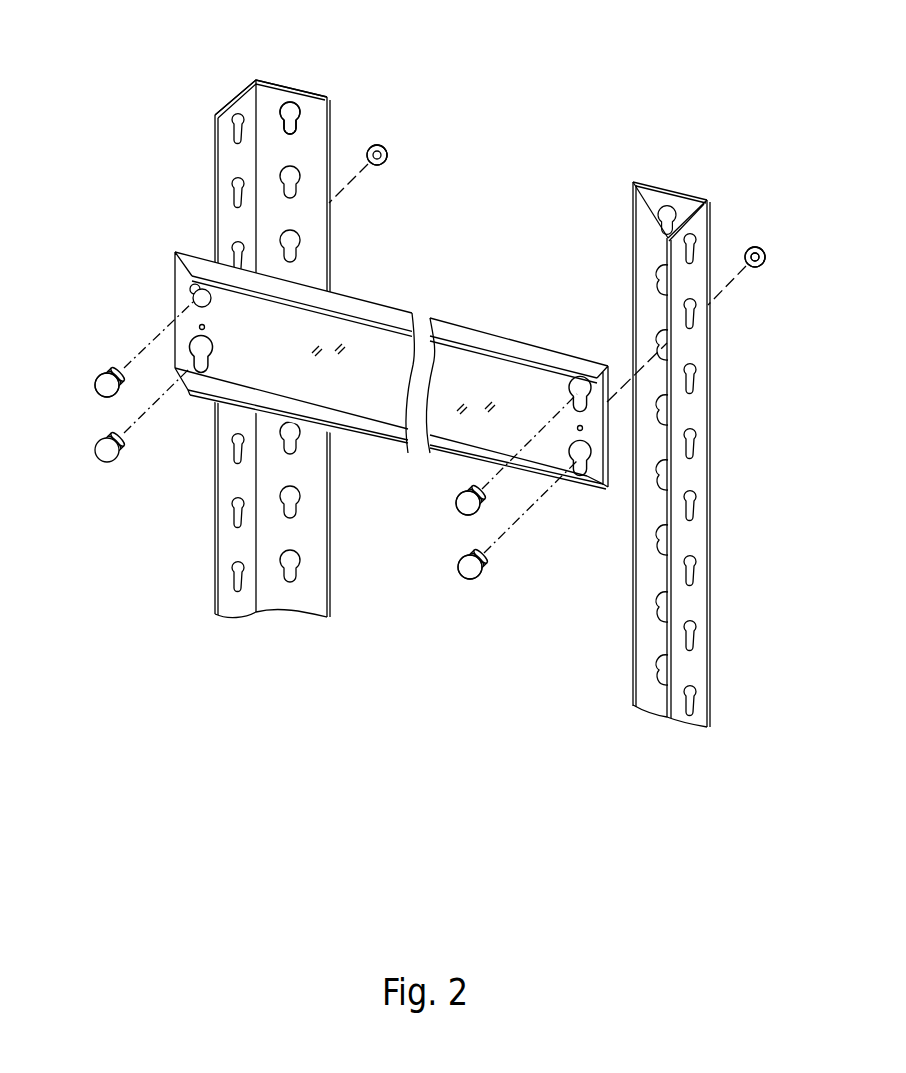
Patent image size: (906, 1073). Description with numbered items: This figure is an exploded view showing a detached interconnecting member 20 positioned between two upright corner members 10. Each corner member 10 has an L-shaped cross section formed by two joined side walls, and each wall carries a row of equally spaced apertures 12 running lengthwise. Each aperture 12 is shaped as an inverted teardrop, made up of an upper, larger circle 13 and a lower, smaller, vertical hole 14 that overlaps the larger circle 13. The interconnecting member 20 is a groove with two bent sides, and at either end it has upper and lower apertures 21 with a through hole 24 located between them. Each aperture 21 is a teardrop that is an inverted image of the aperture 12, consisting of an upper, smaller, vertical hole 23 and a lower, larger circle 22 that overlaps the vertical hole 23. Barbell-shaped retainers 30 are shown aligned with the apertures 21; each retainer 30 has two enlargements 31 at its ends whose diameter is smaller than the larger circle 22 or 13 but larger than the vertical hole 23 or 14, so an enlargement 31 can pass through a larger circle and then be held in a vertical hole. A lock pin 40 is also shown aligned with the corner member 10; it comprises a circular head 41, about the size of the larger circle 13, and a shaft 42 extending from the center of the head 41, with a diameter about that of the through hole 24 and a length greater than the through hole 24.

The corner member 10 is at (231, 91).
The aperture 12 is at (284, 92).
The larger circle 13 is at (294, 109).
The vertical hole 14 is at (298, 131).
The interconnecting member 20 is at (363, 291).
The aperture 21 is at (190, 345).
The larger circle 22 is at (193, 297).
The vertical hole 23 is at (206, 349).
The through hole 24 is at (578, 430).
The retainer 30 is at (100, 370).
The enlargement 31 is at (105, 392).
The lock pin 40 is at (392, 145).
The head 41 is at (386, 161).
The shaft 42 is at (753, 268).